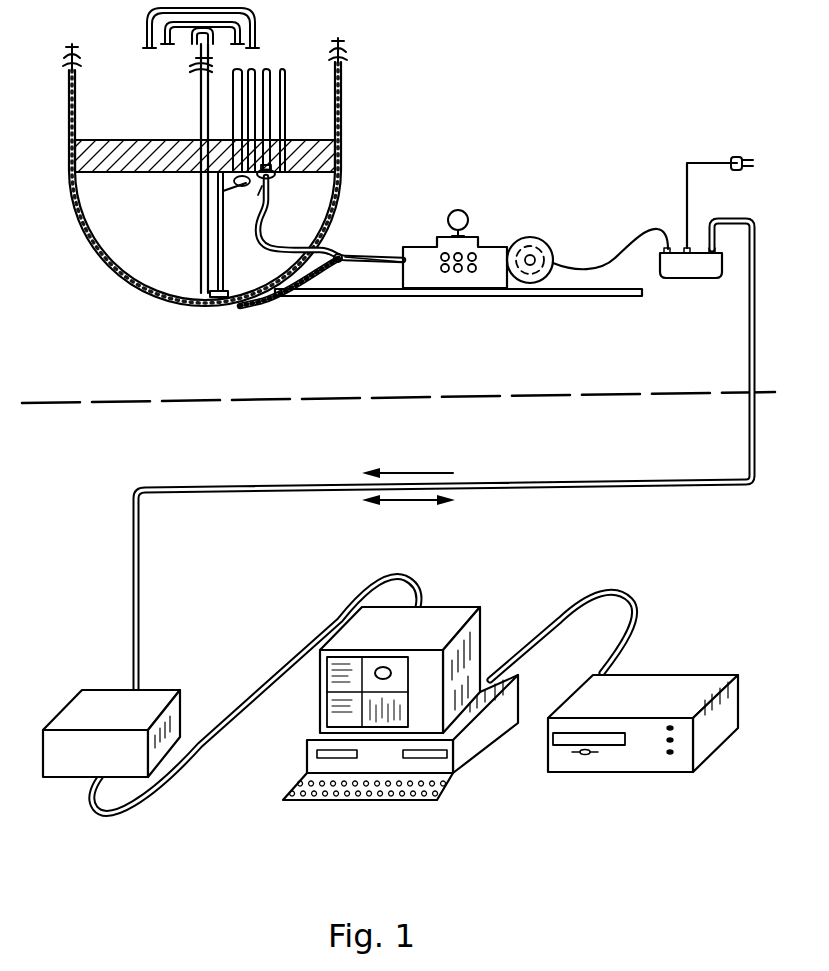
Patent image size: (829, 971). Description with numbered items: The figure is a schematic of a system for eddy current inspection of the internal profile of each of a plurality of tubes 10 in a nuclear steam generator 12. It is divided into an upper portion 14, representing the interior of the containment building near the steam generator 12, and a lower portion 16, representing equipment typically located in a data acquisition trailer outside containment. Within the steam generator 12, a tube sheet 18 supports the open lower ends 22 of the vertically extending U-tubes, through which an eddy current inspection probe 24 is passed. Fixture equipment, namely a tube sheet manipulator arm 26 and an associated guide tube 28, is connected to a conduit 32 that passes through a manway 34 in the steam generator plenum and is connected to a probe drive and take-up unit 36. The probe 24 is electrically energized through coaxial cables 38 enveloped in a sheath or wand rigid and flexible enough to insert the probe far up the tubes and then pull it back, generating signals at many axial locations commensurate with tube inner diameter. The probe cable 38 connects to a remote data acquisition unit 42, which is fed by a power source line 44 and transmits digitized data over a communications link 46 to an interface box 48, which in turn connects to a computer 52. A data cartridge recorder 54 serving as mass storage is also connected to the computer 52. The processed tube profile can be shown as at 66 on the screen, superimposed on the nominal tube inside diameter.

The tubes 10 is at (287, 92).
The nuclear steam generator 12 is at (342, 115).
The upper portion 14 is at (47, 130).
The lower portion 16 is at (108, 483).
The tube sheet 18 is at (340, 141).
The open lower ends 22 is at (283, 178).
The eddy current inspection probe 24 is at (345, 257).
The tube sheet manipulator arm 26 is at (236, 189).
The guide tube 28 is at (258, 195).
The conduit 32 is at (270, 253).
The manway 34 is at (340, 238).
The probe drive and take-up unit 36 is at (470, 236).
The coaxial cables 38 is at (493, 245).
The remote data acquisition unit 42 is at (672, 279).
The power source line 44 is at (685, 173).
The communications link 46 is at (528, 480).
The interface box 48 is at (104, 690).
The computer 52 is at (438, 605).
The data cartridge recorder 54 is at (660, 675).
The profile display 66 is at (392, 673).